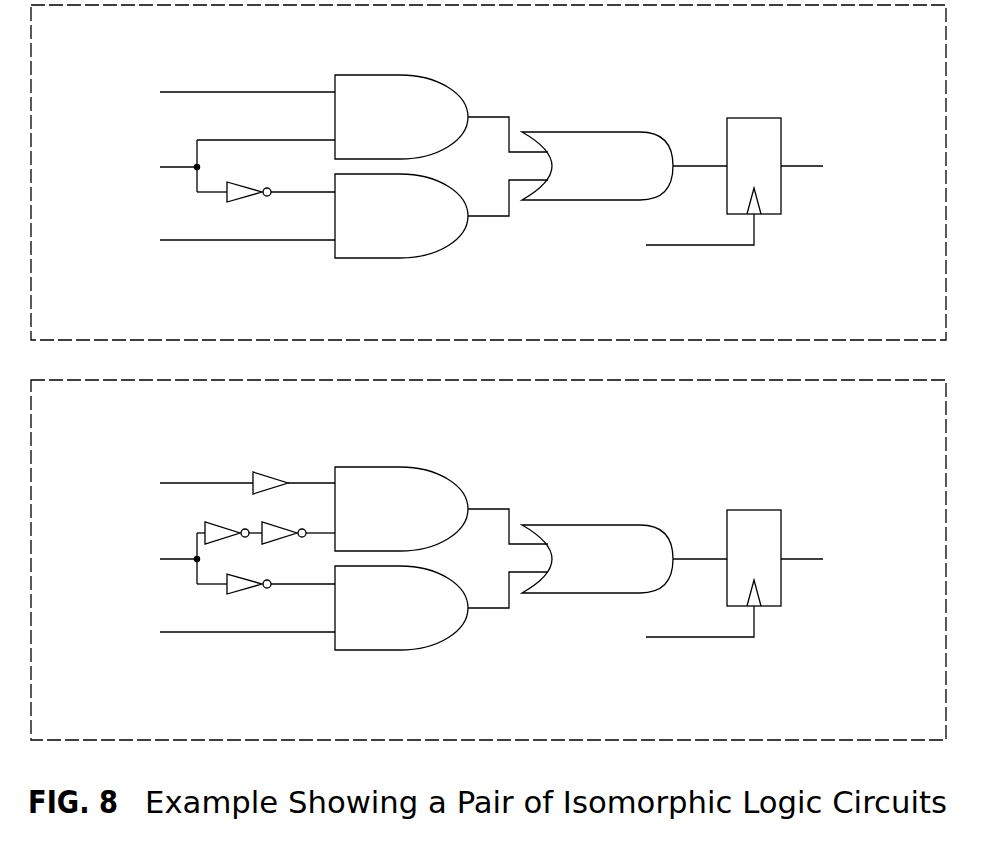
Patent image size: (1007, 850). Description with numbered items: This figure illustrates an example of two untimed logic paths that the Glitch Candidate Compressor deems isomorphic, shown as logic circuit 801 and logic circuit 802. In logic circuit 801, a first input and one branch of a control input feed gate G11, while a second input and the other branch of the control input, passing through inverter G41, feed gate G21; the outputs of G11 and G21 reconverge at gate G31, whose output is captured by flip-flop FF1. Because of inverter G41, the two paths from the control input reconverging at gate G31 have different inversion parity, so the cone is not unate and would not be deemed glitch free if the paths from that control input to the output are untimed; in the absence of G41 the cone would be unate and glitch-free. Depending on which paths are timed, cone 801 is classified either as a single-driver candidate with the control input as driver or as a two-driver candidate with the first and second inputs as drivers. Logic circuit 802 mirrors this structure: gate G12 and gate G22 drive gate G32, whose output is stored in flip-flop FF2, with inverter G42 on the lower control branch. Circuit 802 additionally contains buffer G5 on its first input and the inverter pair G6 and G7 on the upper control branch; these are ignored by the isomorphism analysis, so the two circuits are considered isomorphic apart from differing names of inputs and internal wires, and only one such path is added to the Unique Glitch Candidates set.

The logic circuit 801 is at (930, 46).
The logic circuit 802 is at (930, 417).
The gate G11 is at (401, 117).
The gate G21 is at (401, 216).
The gate G31 is at (597, 166).
The inverter G41 is at (251, 201).
The flip-flop FF1 is at (754, 166).
The gate G12 is at (401, 509).
The gate G22 is at (401, 608).
The gate G32 is at (597, 559).
The inverter G42 is at (251, 593).
The buffer G5 is at (270, 473).
The inverter G6 is at (227, 524).
The inverter G7 is at (284, 524).
The flip-flop FF2 is at (754, 558).